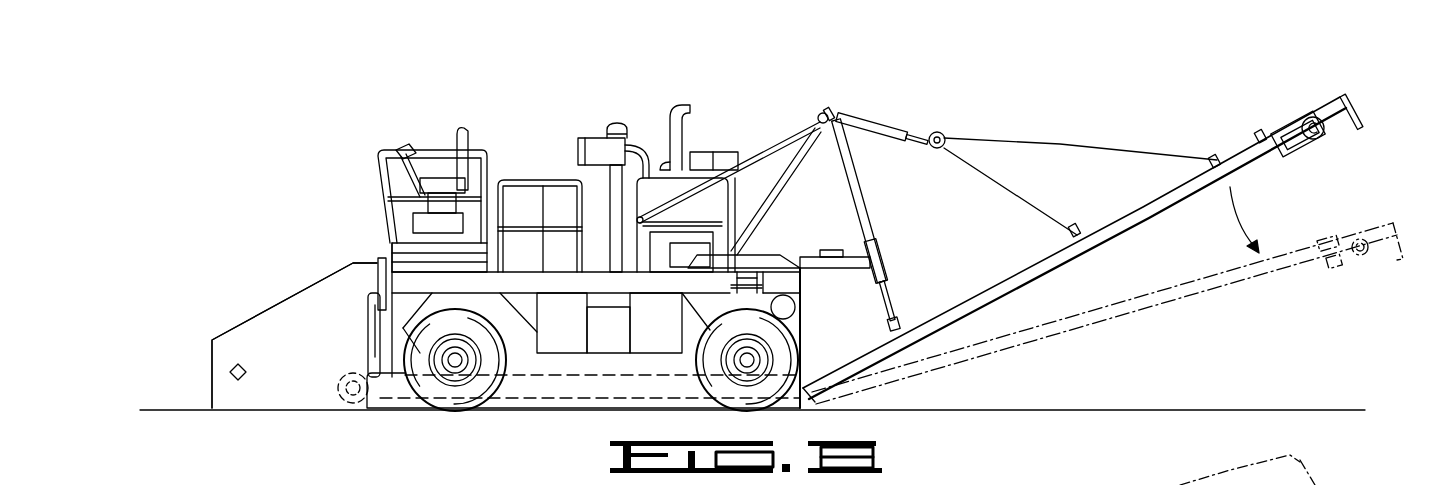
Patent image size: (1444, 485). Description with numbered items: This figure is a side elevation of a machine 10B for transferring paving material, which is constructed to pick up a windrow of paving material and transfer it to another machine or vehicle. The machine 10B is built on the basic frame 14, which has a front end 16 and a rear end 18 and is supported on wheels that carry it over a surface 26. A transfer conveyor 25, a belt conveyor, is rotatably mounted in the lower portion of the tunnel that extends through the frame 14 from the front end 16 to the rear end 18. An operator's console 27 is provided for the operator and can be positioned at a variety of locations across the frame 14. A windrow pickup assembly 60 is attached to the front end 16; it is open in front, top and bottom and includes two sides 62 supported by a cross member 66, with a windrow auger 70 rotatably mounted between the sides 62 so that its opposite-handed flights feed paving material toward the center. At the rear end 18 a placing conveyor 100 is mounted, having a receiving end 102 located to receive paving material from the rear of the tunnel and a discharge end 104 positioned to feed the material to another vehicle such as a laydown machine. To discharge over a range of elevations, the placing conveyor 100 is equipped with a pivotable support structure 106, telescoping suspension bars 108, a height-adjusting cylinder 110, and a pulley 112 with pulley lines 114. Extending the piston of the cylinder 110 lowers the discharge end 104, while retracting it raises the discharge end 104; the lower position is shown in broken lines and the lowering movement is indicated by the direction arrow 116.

The machine for transferring paving material 10B is at (322, 170).
The frame 14 is at (533, 272).
The front end 16 is at (378, 262).
The rear end 18 is at (805, 257).
The transfer conveyor 25 is at (600, 382).
The surface 26 is at (183, 410).
The operator's console 27 is at (385, 163).
The windrow pickup assembly 60 is at (292, 287).
The sides 62 is at (272, 330).
The cross member 66 is at (232, 367).
The windrow auger 70 is at (332, 405).
The placing conveyor 100 is at (1143, 207).
The receiving end 102 is at (807, 360).
The discharge end 104 is at (1337, 95).
The pivotable support structure 106 is at (822, 122).
The telescoping suspension bars 108 is at (892, 290).
The height-adjusting cylinder 110 is at (870, 120).
The pulley 112 is at (944, 133).
The pulley lines 114 is at (1002, 187).
The direction arrow 116 is at (1247, 213).